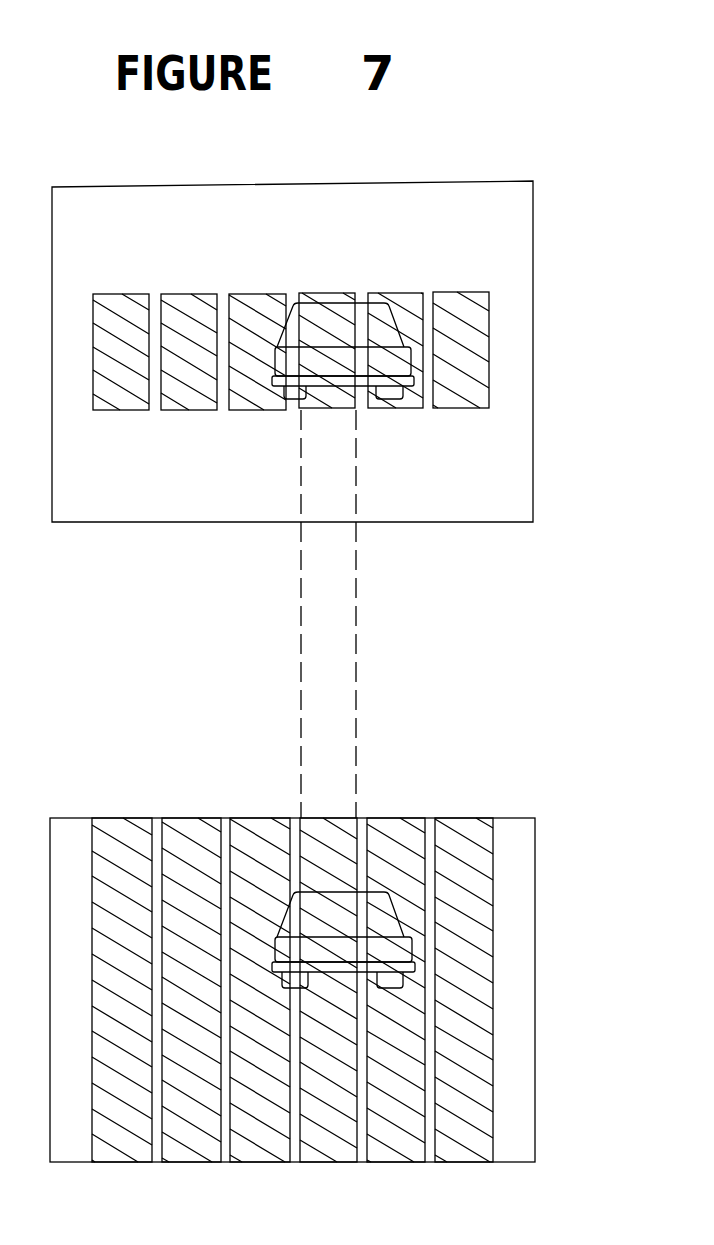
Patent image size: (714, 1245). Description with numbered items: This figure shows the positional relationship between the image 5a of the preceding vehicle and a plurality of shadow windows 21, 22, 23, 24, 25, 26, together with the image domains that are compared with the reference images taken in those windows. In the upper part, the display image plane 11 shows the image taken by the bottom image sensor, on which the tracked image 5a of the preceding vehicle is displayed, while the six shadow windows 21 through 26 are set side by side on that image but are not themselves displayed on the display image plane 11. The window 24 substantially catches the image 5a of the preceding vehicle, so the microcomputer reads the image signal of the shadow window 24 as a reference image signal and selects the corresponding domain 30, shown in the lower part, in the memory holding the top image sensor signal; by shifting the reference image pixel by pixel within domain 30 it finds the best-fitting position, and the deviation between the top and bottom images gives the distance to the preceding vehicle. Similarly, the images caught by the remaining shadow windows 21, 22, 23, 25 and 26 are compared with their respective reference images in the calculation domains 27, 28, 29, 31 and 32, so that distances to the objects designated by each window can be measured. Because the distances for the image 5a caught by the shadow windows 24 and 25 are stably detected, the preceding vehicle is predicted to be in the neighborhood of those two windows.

The display image plane 11 is at (533, 433).
The shadow window 21 is at (118, 294).
The shadow window 22 is at (188, 294).
The shadow window 23 is at (252, 294).
The shadow window 24 is at (330, 293).
The shadow window 25 is at (395, 293).
The shadow window 26 is at (465, 292).
The image of the preceding vehicle 5a is at (388, 380).
The calculation domain 27 is at (125, 818).
The calculation domain 28 is at (191, 818).
The calculation domain 29 is at (265, 818).
The domain 30 is at (331, 818).
The calculation domain 31 is at (395, 818).
The calculation domain 32 is at (465, 818).